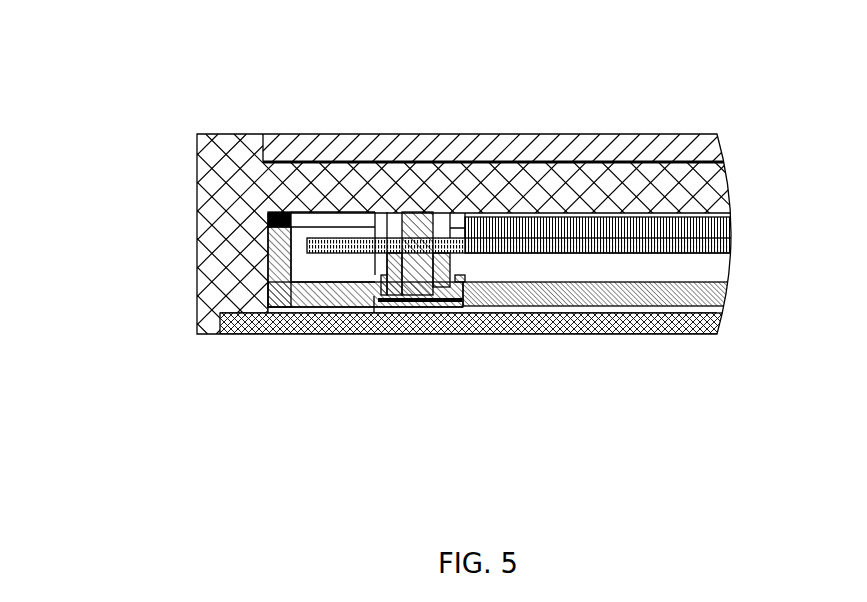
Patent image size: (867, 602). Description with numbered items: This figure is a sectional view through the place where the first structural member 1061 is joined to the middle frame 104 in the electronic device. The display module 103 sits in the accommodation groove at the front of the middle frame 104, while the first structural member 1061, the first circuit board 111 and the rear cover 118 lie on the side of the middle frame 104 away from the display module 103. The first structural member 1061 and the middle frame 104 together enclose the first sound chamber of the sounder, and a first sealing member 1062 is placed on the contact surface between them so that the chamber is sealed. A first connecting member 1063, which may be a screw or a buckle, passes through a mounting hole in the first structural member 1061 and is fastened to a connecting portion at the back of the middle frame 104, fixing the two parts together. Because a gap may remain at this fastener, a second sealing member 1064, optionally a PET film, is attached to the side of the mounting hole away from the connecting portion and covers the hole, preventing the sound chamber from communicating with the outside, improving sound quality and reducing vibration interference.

The display module 103 is at (443, 160).
The middle frame 104 is at (578, 178).
The first circuit board 111 is at (660, 240).
The rear cover 118 is at (583, 320).
The first structural member 1061 is at (640, 292).
The first sealing member 1062 is at (197, 242).
The first connecting member 1063 is at (357, 287).
The second sealing member 1064 is at (437, 302).